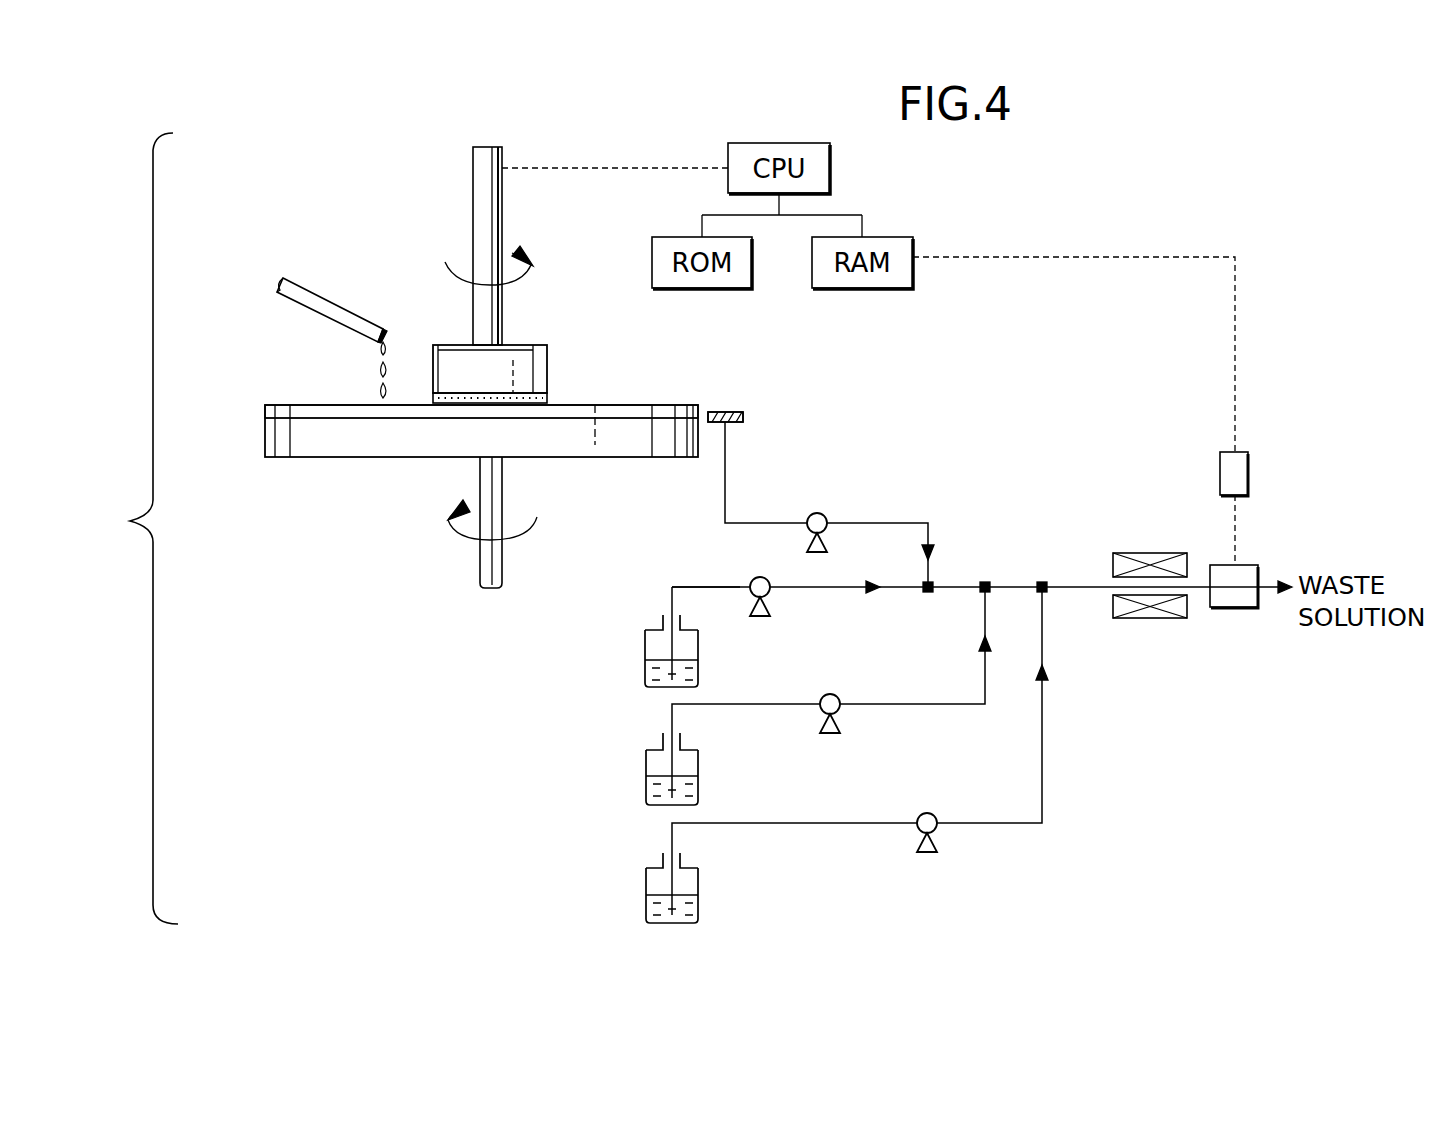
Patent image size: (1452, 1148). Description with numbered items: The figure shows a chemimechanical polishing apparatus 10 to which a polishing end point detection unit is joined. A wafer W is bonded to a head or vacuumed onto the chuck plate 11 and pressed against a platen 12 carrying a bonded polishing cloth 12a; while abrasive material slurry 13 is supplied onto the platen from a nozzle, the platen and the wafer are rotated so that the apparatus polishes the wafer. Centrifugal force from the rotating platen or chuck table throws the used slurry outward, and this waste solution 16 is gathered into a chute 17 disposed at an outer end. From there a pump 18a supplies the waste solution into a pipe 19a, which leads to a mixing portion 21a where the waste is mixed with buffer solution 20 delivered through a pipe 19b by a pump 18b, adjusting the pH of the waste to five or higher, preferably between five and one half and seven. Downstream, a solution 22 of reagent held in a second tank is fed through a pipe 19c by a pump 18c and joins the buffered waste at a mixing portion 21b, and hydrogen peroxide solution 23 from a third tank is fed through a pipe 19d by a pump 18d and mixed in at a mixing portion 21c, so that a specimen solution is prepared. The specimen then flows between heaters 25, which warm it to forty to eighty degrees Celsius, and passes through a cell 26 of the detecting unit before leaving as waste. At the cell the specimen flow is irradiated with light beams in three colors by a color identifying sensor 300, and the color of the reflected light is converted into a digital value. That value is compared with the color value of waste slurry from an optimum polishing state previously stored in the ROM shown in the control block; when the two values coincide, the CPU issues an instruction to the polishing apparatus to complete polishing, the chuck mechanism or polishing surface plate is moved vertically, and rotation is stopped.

The CMP apparatus 10 is at (583, 265).
The chuck plate 11 is at (547, 357).
The wafer W is at (547, 399).
The platen 12 is at (265, 444).
The polishing cloth 12a is at (265, 410).
The abrasive material slurry 13 is at (376, 371).
The waste solution 16 is at (738, 412).
The chute 17 is at (745, 411).
The pump 18a is at (820, 513).
The pump 18b is at (770, 603).
The pump 18c is at (822, 733).
The pump 18d is at (931, 813).
The pipe 19a is at (922, 523).
The pipe 19b is at (700, 587).
The pipe 19c is at (752, 704).
The pipe 19d is at (732, 823).
The buffer solution 20 is at (646, 643).
The mixing portion 21a is at (928, 593).
The mixing portion 21b is at (985, 582).
The mixing portion 21c is at (1042, 582).
The solution of reagent 22 is at (646, 761).
The hydrogen peroxide solution 23 is at (646, 881).
The heaters 25 is at (1158, 553).
The cell 26 is at (1248, 565).
The color identifying sensor 300 is at (1248, 474).